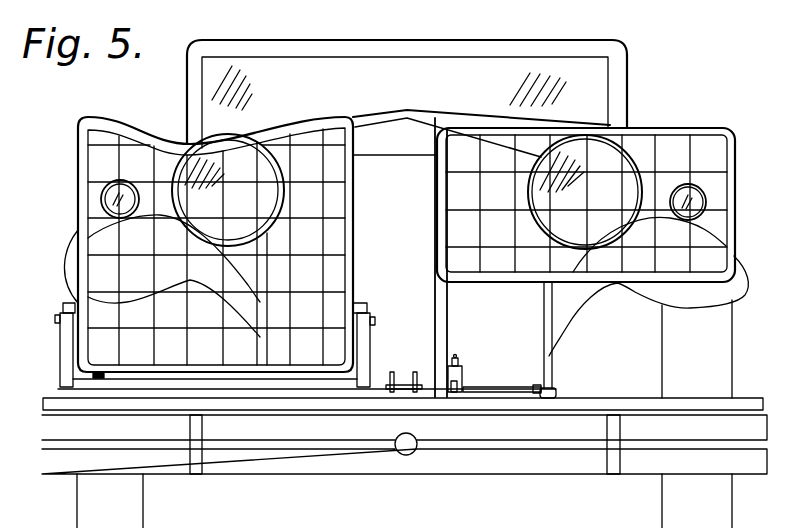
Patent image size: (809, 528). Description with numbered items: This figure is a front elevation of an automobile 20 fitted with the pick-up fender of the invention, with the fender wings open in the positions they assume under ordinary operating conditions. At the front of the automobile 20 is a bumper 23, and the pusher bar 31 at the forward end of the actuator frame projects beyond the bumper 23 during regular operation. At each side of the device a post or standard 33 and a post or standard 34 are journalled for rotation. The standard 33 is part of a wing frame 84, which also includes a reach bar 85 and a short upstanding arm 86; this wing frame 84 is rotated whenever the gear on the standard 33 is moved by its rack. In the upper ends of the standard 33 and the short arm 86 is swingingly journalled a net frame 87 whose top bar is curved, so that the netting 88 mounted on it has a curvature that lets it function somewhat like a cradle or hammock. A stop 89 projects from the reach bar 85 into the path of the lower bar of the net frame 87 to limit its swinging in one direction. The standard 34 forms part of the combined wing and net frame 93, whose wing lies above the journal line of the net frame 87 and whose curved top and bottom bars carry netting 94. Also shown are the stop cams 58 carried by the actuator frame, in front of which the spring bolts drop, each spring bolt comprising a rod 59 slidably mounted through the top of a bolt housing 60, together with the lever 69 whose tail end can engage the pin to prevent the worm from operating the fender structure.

The automobile 20 is at (740, 516).
The bumper 23 is at (548, 475).
The pusher bar 31 is at (745, 400).
The post or standard 33 is at (372, 347).
The post or standard 34 is at (436, 285).
The stop cam 58 is at (462, 380).
The rod 59 is at (456, 357).
The bolt housing 60 is at (462, 368).
The lever 69 is at (522, 383).
The wing frame 84 is at (60, 365).
The reach bar 85 is at (88, 380).
The short upstanding arm 86 is at (60, 338).
The net frame 87 is at (78, 226).
The netting 88 is at (93, 171).
The stop 89 is at (102, 374).
The combined wing and net frame 93 is at (746, 147).
The netting 94 is at (664, 143).